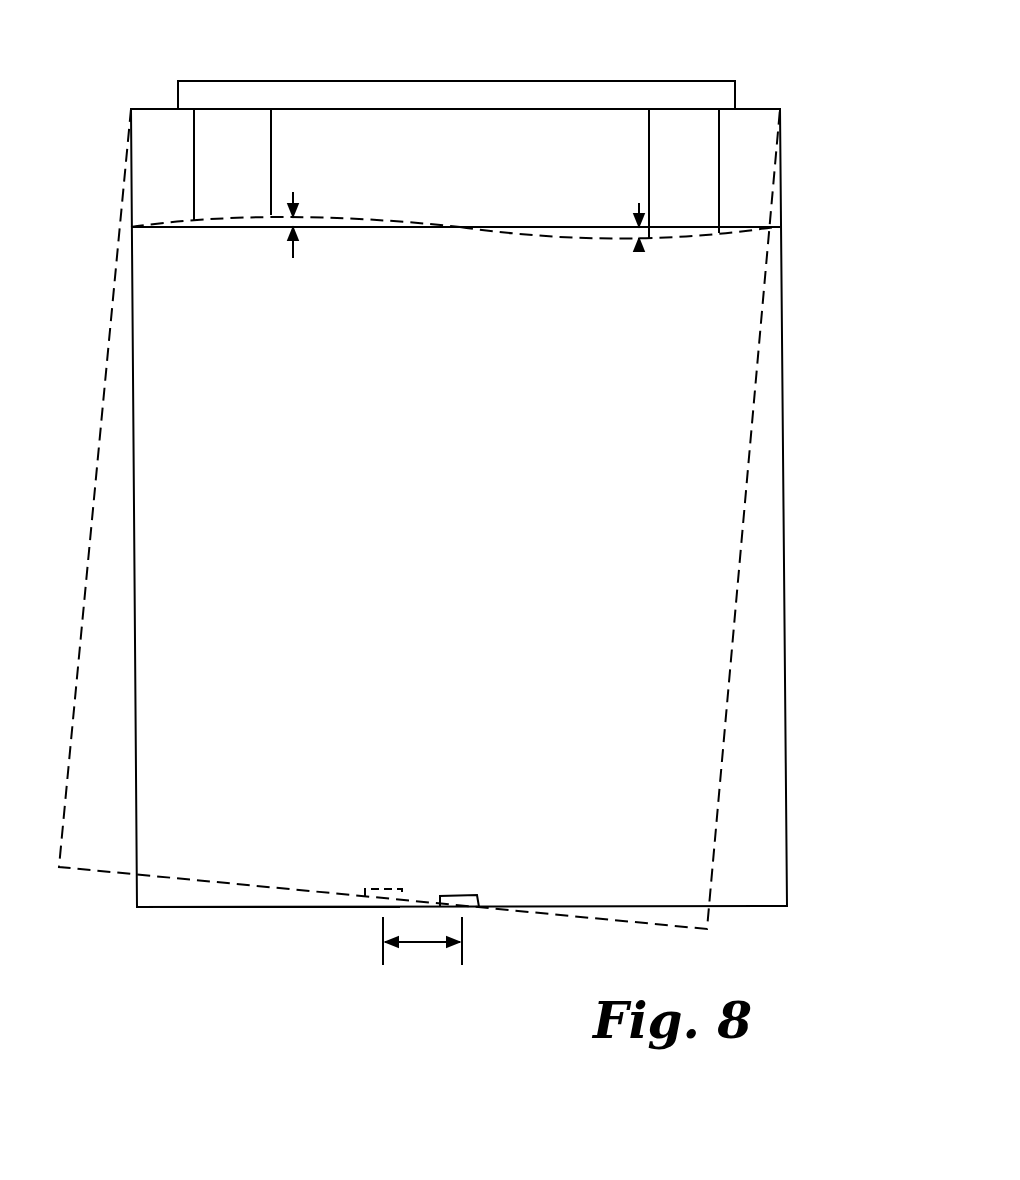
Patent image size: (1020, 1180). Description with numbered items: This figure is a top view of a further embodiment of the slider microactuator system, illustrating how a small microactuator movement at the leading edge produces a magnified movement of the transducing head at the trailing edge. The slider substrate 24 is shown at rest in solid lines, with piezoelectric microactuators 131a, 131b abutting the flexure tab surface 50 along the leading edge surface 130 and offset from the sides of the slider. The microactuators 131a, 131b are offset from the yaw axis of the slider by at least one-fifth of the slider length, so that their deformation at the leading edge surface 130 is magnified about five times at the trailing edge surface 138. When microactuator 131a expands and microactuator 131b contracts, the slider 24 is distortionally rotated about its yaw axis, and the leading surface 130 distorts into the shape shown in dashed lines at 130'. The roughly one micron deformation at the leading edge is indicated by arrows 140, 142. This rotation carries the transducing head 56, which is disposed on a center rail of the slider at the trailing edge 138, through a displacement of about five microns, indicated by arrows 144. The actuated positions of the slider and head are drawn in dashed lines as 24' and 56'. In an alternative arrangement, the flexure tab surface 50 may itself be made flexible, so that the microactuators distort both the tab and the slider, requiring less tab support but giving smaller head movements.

The slider substrate 24 is at (491, 508).
The displaced position of slider substrate 24' is at (462, 519).
The flexure tab surface 50 is at (705, 81).
The piezoelectric microactuator 131a is at (649, 128).
The piezoelectric microactuator 131b is at (271, 126).
The leading edge surface 130 is at (617, 204).
The distorted leading surface 130' is at (295, 198).
The arrow indicating leading edge deformation 140 is at (639, 262).
The arrow indicating leading edge deformation 142 is at (293, 254).
The trailing edge surface 138 is at (252, 908).
The transducing head 56 is at (487, 881).
The displaced position of transducing head 56' is at (407, 868).
The arrows indicating head displacement 144 is at (418, 942).